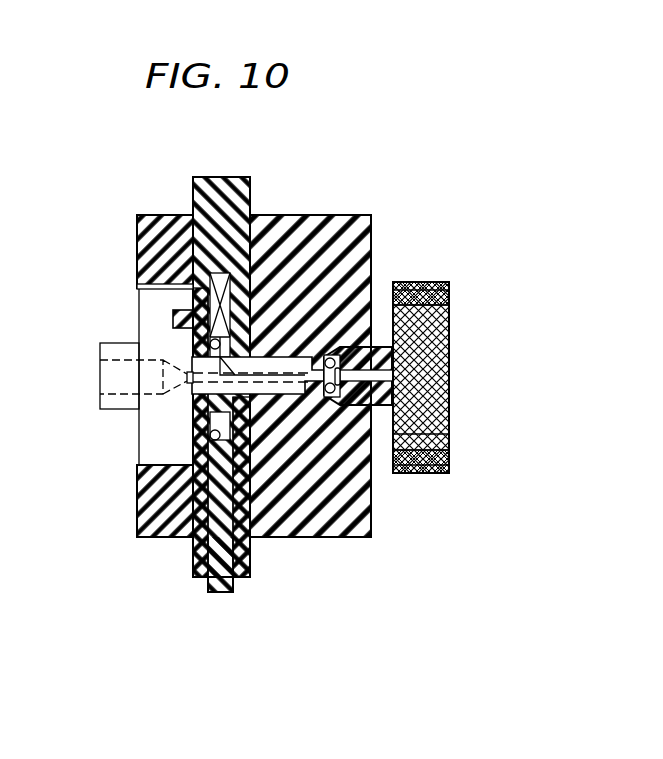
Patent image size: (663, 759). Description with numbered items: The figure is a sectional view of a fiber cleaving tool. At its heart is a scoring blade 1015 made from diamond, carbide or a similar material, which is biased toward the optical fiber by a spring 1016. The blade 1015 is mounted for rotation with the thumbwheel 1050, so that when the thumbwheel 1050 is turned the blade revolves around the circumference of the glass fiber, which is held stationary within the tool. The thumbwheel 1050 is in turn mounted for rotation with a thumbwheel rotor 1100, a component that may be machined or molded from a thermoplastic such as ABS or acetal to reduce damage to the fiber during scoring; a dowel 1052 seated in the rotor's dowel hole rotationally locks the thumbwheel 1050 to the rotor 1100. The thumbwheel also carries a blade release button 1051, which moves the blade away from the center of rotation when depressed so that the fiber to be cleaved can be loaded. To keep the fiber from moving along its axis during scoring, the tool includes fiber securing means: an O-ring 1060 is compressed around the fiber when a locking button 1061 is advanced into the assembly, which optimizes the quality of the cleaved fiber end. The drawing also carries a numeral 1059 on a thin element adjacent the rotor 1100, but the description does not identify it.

The scoring blade 1015 is at (340, 280).
The spring 1016 is at (232, 277).
The thumbwheel 1050 is at (222, 177).
The blade release button 1051 is at (218, 595).
The dowel 1052 is at (173, 315).
The plate 1059 is at (198, 288).
The O-ring 1060 is at (328, 390).
The locking button 1061 is at (450, 378).
The thumbwheel rotor 1100 is at (150, 440).